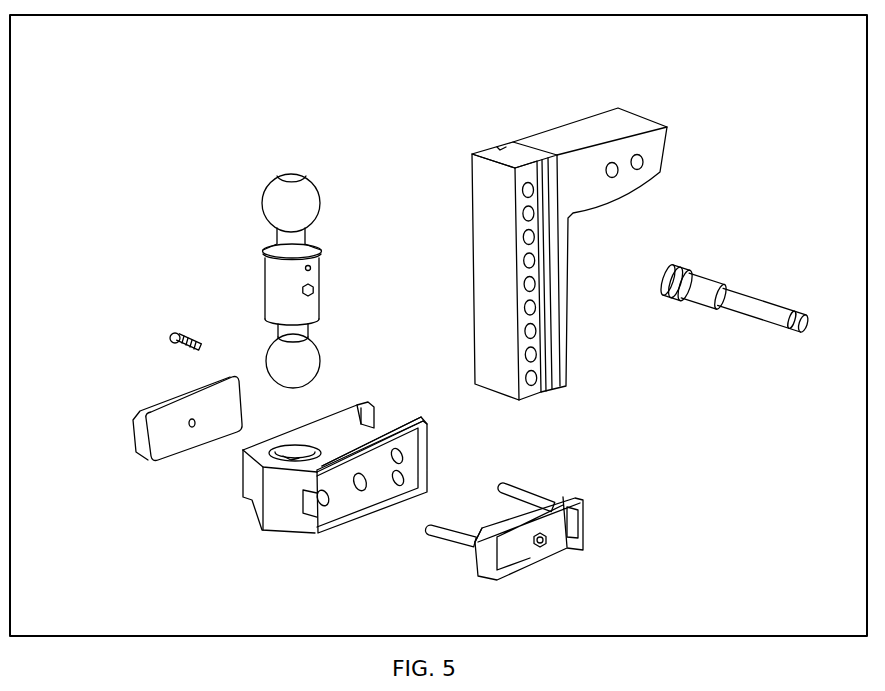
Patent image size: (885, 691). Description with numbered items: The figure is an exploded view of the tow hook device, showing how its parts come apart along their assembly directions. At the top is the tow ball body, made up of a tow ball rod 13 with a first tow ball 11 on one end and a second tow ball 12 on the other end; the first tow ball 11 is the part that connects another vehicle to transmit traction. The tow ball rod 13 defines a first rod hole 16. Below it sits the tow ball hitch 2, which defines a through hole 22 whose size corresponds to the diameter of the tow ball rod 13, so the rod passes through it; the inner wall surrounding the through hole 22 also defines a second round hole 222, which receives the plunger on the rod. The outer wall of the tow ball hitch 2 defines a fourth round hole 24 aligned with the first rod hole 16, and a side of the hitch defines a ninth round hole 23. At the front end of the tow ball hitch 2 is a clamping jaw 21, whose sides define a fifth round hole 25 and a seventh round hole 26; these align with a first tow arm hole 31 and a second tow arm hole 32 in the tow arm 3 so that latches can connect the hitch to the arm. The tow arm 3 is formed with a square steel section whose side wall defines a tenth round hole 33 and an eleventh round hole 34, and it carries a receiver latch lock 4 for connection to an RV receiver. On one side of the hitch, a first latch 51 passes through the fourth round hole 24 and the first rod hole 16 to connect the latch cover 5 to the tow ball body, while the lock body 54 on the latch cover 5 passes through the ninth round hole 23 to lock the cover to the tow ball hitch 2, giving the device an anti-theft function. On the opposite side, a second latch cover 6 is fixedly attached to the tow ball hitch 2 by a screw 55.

The first tow ball 11 is at (291, 203).
The second tow ball 12 is at (303, 362).
The tow ball rod 13 is at (273, 300).
The first rod hole 16 is at (316, 288).
The screw 55 is at (172, 333).
The latch cover 6 is at (152, 437).
The tow ball hitch 2 is at (270, 493).
The through hole 22 is at (296, 455).
The second round hole 222 is at (275, 459).
The clamping jaw 21 is at (373, 418).
The fifth round hole 25 is at (401, 453).
The seventh round hole 26 is at (402, 476).
The ninth round hole 23 is at (360, 489).
The fourth round hole 24 is at (322, 504).
The tow arm 3 is at (557, 177).
The first tow arm hole 31 is at (532, 282).
The second tow arm hole 32 is at (531, 306).
The tenth round hole 33 is at (614, 167).
The eleventh round hole 34 is at (640, 158).
The receiver latch lock 4 is at (693, 290).
The latch cover 5 is at (570, 493).
The first latch 51 is at (453, 542).
The lock body 54 is at (558, 557).